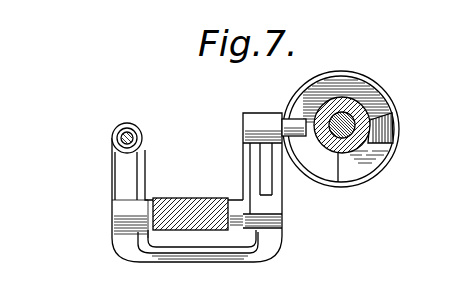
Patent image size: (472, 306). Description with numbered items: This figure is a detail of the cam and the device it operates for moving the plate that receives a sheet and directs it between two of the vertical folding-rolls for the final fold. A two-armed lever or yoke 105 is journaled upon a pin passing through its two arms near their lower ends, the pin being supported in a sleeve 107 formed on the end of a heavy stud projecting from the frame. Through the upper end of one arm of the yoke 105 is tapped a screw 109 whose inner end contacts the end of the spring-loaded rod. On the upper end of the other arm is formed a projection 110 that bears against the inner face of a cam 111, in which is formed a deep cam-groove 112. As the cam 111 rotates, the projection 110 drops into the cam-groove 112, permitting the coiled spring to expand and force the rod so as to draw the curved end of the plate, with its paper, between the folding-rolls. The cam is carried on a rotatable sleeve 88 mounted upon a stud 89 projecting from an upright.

The two-armed lever or yoke 105 is at (232, 254).
The sleeve 107 is at (237, 207).
The screw 109 is at (118, 137).
The projection 110 is at (305, 138).
The cam 111 is at (331, 82).
The cam-groove 112 is at (440, 106).
The sleeve 88 is at (345, 112).
The stud 89 is at (318, 108).